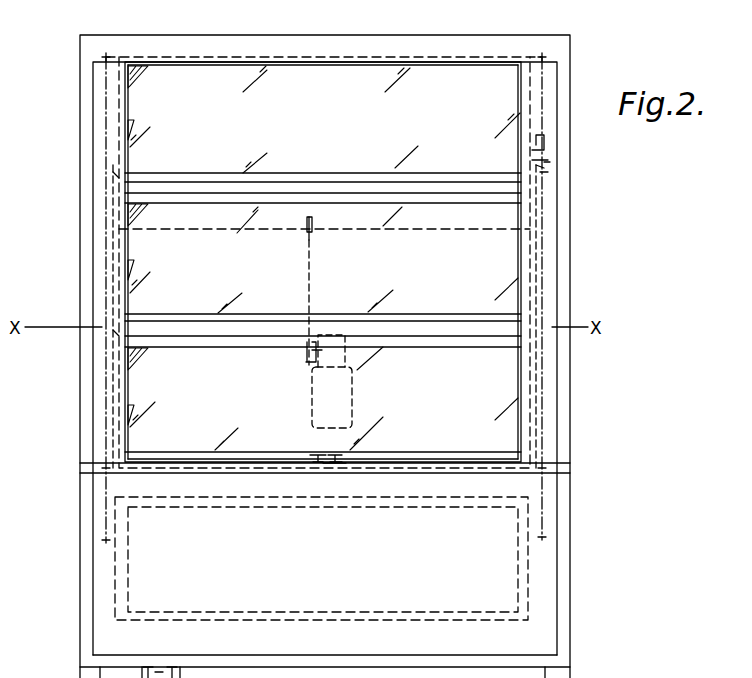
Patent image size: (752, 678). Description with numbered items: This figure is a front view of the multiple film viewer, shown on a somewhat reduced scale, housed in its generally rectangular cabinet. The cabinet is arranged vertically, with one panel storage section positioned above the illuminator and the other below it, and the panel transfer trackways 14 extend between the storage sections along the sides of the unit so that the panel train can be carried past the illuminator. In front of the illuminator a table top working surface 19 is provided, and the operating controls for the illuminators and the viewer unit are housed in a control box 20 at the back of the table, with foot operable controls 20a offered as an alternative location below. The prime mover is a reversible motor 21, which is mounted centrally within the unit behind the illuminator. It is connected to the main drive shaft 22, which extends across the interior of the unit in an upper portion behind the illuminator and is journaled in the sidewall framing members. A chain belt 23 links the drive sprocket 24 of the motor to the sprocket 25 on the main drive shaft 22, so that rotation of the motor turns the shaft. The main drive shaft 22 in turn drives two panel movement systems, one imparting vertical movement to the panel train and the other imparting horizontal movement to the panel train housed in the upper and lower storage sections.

The panel transfer trackway 14 is at (103, 258).
The table top working surface 19 is at (562, 463).
The control box 20 is at (318, 454).
The foot operable controls 20a is at (155, 672).
The reversible motor 21 is at (311, 392).
The main drive shaft 22 is at (355, 230).
The chain belt 23 is at (307, 280).
The drive sprocket 24 is at (306, 358).
The sprocket 25 is at (306, 231).